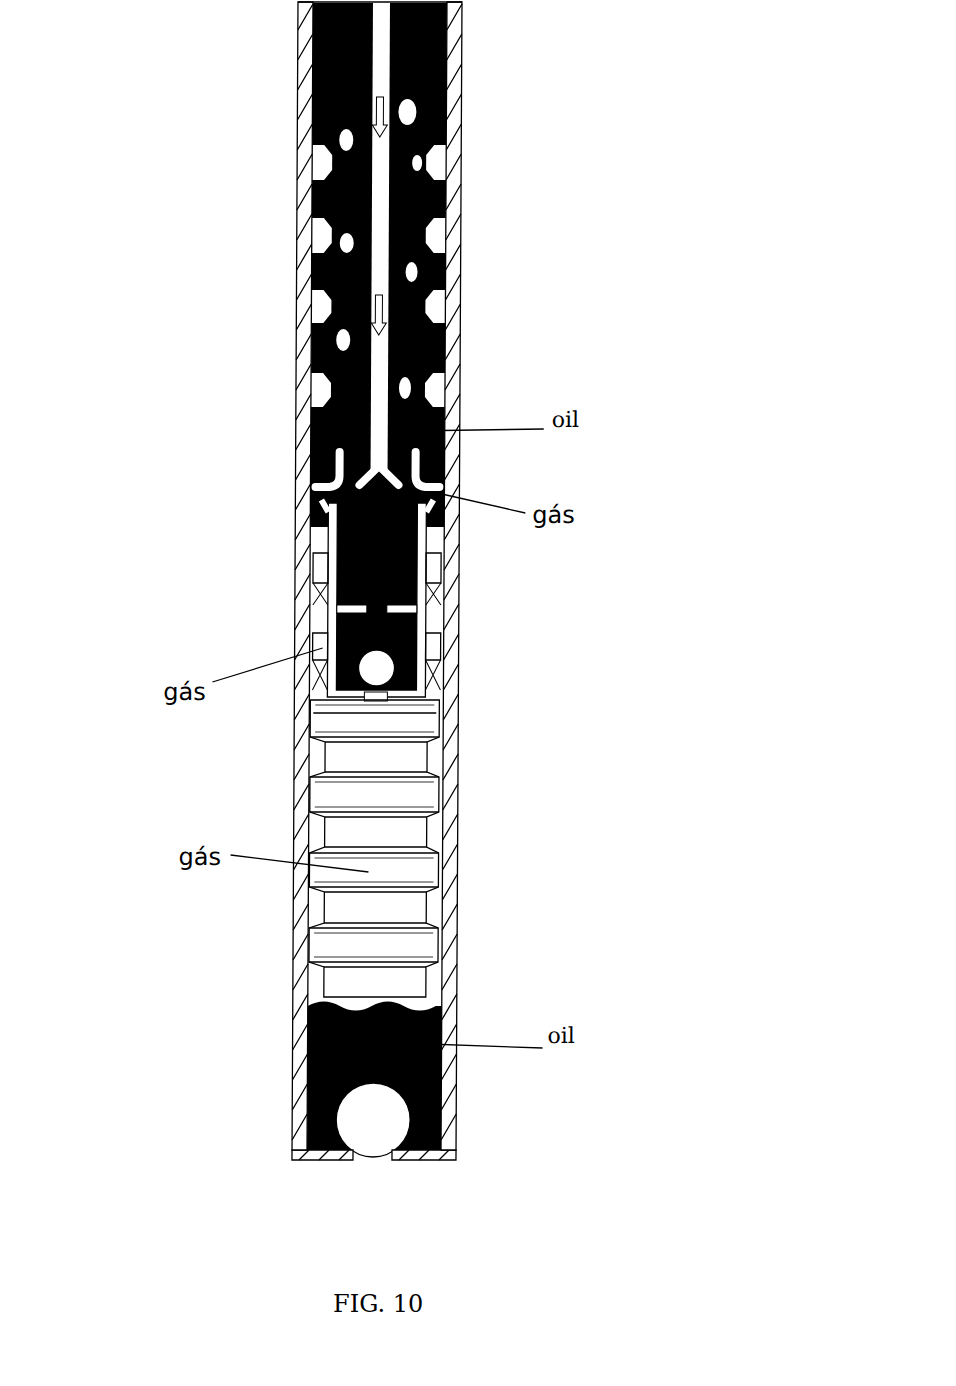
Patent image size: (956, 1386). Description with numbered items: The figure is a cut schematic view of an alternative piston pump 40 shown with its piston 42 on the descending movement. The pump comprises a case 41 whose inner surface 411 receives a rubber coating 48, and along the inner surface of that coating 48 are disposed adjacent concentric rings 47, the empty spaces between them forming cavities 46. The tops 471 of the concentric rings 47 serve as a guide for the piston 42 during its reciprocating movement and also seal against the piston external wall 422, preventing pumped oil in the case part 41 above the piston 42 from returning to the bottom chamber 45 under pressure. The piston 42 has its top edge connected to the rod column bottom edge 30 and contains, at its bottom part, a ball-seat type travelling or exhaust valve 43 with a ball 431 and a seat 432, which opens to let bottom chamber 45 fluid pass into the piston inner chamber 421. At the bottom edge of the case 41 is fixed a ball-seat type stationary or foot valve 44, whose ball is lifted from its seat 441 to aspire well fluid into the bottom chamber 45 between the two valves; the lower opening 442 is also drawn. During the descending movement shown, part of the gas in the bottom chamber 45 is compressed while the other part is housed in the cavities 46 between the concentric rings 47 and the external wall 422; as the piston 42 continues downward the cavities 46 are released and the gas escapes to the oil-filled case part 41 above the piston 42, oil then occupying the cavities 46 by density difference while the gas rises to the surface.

The alternative piston pump 40 is at (555, 105).
The case 41 is at (305, 93).
The inner surface of case 411 is at (314, 269).
The coating 48 is at (321, 166).
The concentric ring tops 471 is at (331, 318).
The concentric rings 47 is at (443, 394).
The rod column bottom edge 30 is at (391, 212).
The cavities 46 is at (322, 501).
The piston 42 is at (340, 543).
The inner chamber 421 is at (391, 546).
The external wall 422 is at (330, 574).
The travelling valve 43 is at (398, 633).
The ball 431 is at (402, 668).
The seat 432 is at (370, 695).
The bottom chamber 45 is at (394, 795).
The stationary valve 44 is at (333, 1122).
The seat 441 is at (414, 1123).
The bottom opening 442 is at (359, 1162).